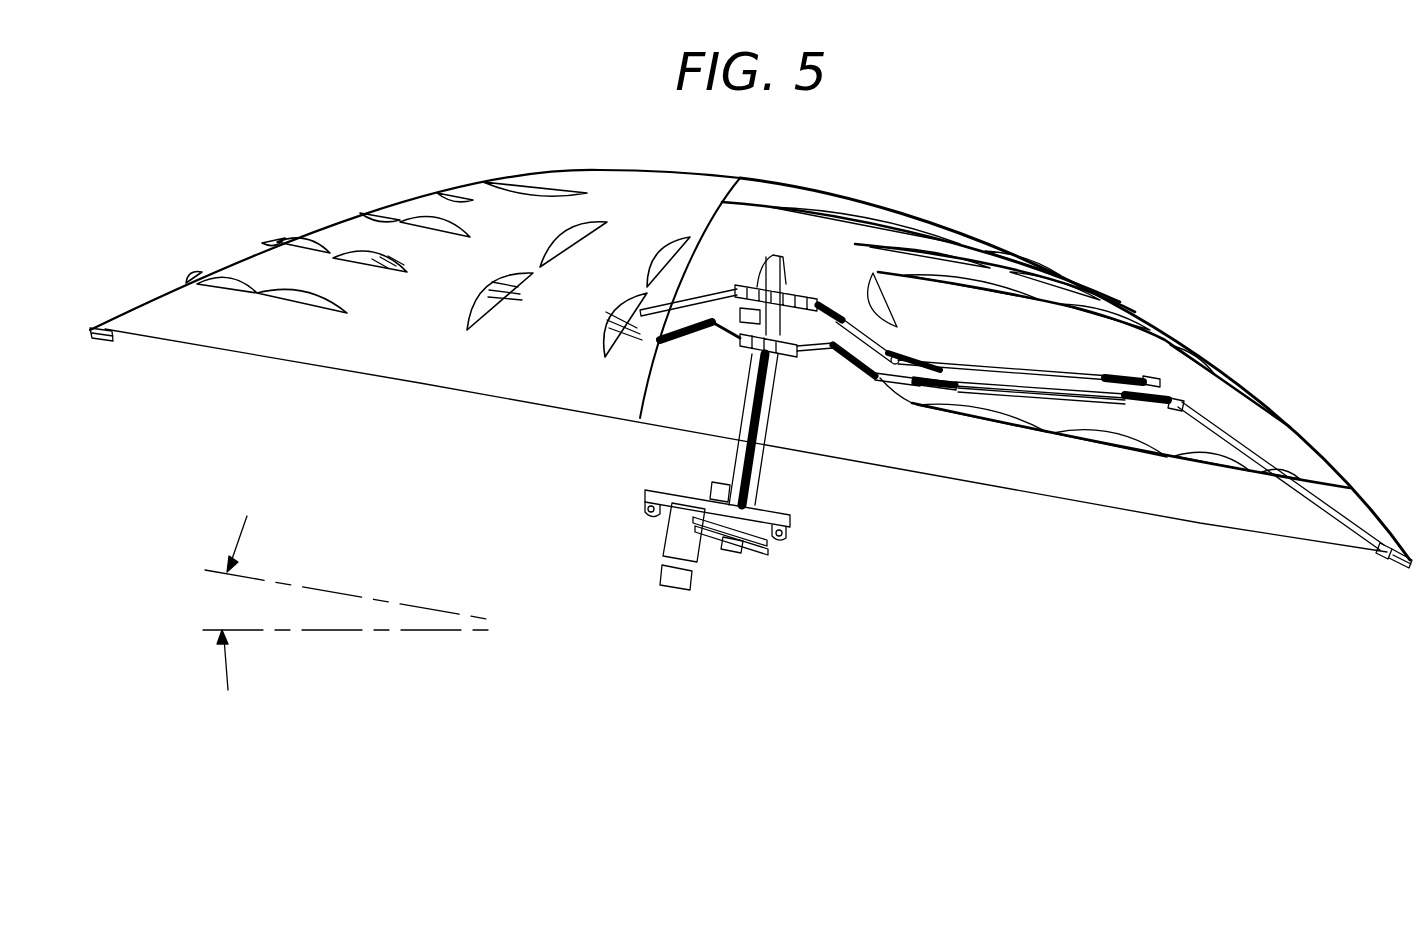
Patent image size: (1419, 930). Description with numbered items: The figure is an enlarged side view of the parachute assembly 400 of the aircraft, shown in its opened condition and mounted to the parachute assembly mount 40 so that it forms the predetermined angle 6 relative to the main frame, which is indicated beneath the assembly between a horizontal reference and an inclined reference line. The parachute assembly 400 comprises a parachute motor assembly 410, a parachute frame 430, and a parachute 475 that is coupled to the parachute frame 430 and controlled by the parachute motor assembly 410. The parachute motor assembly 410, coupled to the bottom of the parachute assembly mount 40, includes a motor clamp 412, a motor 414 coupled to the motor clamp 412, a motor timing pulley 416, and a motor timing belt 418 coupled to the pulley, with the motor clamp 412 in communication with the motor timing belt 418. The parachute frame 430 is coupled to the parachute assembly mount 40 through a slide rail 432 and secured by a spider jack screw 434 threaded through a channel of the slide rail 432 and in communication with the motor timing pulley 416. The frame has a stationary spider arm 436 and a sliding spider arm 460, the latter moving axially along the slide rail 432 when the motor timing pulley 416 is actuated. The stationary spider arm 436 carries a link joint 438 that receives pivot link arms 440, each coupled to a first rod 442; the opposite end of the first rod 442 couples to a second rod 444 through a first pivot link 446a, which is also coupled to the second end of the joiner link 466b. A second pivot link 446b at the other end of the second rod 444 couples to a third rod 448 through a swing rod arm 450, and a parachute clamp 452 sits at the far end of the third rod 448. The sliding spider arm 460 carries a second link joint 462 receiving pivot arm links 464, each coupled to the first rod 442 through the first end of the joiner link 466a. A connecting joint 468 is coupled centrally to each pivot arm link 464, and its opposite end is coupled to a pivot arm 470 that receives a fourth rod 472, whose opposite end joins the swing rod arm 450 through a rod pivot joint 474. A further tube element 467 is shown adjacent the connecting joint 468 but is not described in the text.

The parachute assembly 400 is at (1183, 171).
The parachute frame 430 is at (1267, 442).
The parachute 475 is at (490, 378).
The parachute assembly mount 40 is at (631, 481).
The parachute motor assembly 410 is at (720, 552).
The motor clamp 412 is at (669, 533).
The motor 414 is at (667, 584).
The motor timing pulley 416 is at (745, 553).
The motor timing belt 418 is at (762, 537).
The slide rail 432 is at (740, 478).
The spider jack screw 434 is at (762, 463).
The stationary spider arm 436 is at (770, 263).
The link joint 438 is at (745, 290).
The pivot link arm 440 is at (842, 322).
The first rod 442 is at (884, 306).
The second rod 444 is at (1065, 381).
The first pivot link 446a is at (932, 378).
The second pivot link 446b is at (1132, 374).
The third rod 448 is at (1295, 488).
The swing rod arm 450 is at (1152, 386).
The parachute clamp 452 is at (1386, 561).
The sliding spider arm 460 is at (750, 369).
The second link joint 462 is at (741, 343).
The pivot arm link 464 is at (830, 350).
The joiner link first end 466a is at (892, 358).
The joiner link second end 466b is at (890, 366).
The tube 467 is at (912, 395).
The connecting joint 468 is at (866, 380).
The pivot arm 470 is at (946, 388).
The fourth rod 472 is at (1012, 389).
The rod pivot joint 474 is at (1150, 400).
The predetermined angle 6 is at (348, 593).